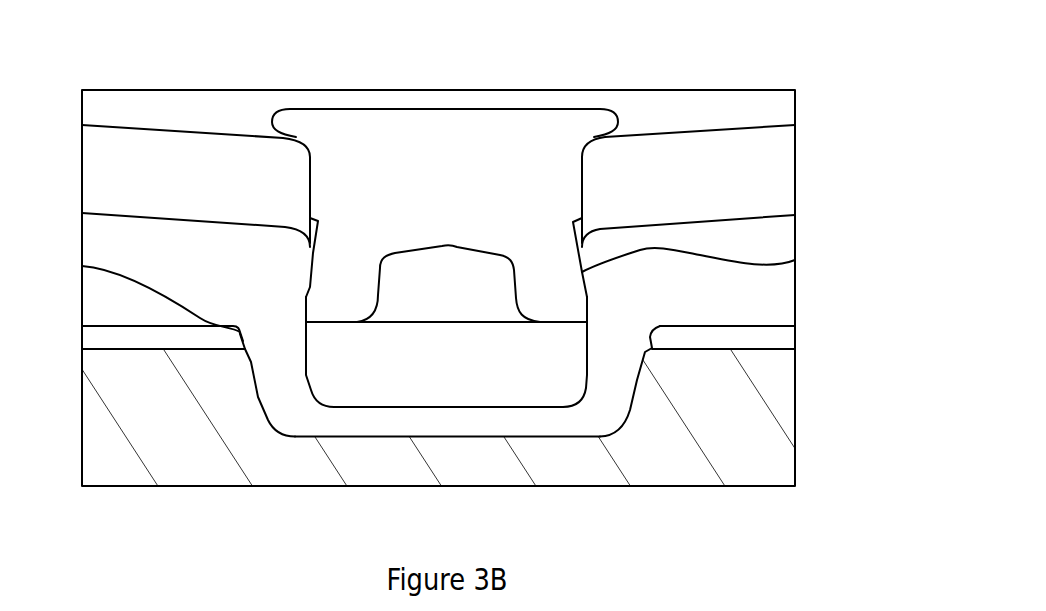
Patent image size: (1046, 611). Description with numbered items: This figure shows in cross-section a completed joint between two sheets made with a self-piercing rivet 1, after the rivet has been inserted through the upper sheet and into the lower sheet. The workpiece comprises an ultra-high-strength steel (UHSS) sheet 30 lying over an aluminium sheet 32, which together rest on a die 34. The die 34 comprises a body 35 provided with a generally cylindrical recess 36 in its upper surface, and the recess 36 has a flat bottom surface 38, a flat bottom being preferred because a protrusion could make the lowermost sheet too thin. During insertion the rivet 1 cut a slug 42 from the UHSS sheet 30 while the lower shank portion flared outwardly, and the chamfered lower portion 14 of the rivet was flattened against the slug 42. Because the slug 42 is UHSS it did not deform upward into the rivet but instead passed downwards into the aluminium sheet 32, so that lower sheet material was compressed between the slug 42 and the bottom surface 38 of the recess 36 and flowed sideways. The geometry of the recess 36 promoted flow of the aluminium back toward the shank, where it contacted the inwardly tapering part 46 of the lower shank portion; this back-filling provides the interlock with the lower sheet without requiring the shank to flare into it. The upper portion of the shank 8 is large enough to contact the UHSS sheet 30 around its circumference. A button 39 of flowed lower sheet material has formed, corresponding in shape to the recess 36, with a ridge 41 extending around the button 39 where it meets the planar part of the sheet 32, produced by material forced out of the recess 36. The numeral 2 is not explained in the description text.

The rivet 1 is at (486, 152).
The cap layer 2 is at (288, 127).
The upper portion of the shank 8 is at (583, 185).
The chamfered lower portion 14 is at (338, 295).
The UHSS sheet 30 is at (767, 196).
The aluminium sheet 32 is at (767, 305).
The die 34 is at (766, 413).
The body 35 is at (673, 447).
The recess 36 is at (360, 437).
The bottom surface 38 is at (442, 437).
The button 39 is at (598, 410).
The ridge 41 is at (82, 266).
The slug 42 is at (503, 357).
The inwardly tapering part 46 is at (795, 261).